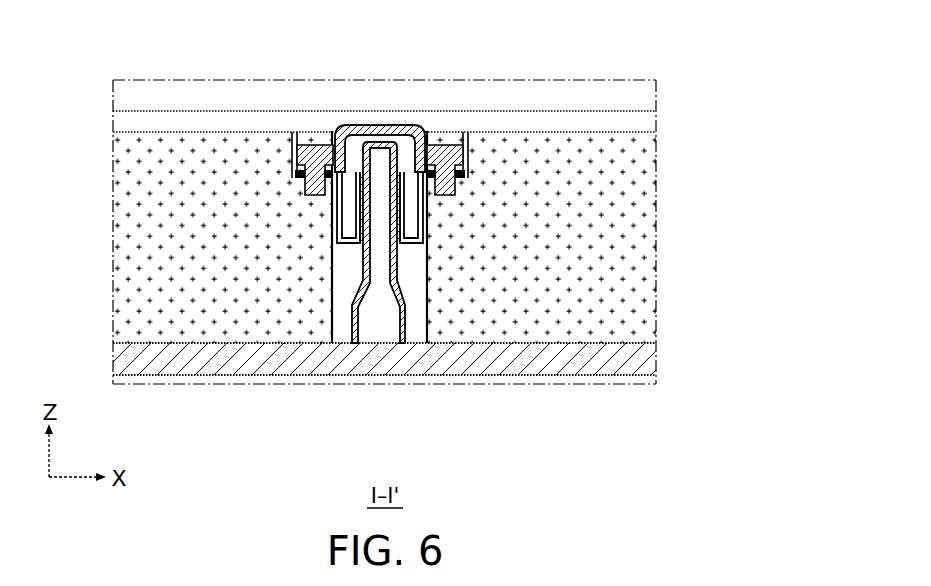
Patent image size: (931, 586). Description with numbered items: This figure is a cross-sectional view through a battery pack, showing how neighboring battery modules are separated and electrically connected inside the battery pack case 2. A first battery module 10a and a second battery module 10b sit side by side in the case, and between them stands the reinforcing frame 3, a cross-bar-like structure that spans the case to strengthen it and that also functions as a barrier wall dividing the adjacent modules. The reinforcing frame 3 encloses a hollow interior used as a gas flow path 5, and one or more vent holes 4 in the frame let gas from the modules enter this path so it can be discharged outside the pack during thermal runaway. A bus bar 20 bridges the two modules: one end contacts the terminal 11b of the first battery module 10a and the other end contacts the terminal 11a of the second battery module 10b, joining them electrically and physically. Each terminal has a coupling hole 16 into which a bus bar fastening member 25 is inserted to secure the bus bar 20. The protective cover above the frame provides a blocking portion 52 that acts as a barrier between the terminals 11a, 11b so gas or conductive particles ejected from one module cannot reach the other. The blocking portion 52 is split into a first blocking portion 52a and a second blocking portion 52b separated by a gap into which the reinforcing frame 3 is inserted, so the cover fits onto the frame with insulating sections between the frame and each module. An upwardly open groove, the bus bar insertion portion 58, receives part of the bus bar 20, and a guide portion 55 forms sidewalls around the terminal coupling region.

The battery pack case 2 is at (656, 357).
The reinforcing frame 3 is at (363, 338).
The vent hole 4 is at (405, 335).
The gas flow path 5 is at (378, 337).
The first battery module 10a is at (655, 240).
The second battery module 10b is at (124, 240).
The terminal of the second battery module 11a is at (292, 175).
The terminal of the first battery module 11b is at (470, 172).
The coupling hole 16 is at (320, 158).
The bus bar 20 is at (394, 145).
The bus bar fastening member 25 is at (290, 150).
The blocking portion 52 is at (457, 326).
The first blocking portion 52a is at (363, 283).
The second blocking portion 52b is at (412, 247).
The guide portion 55 is at (469, 153).
The bus bar insertion portion 58 is at (341, 197).